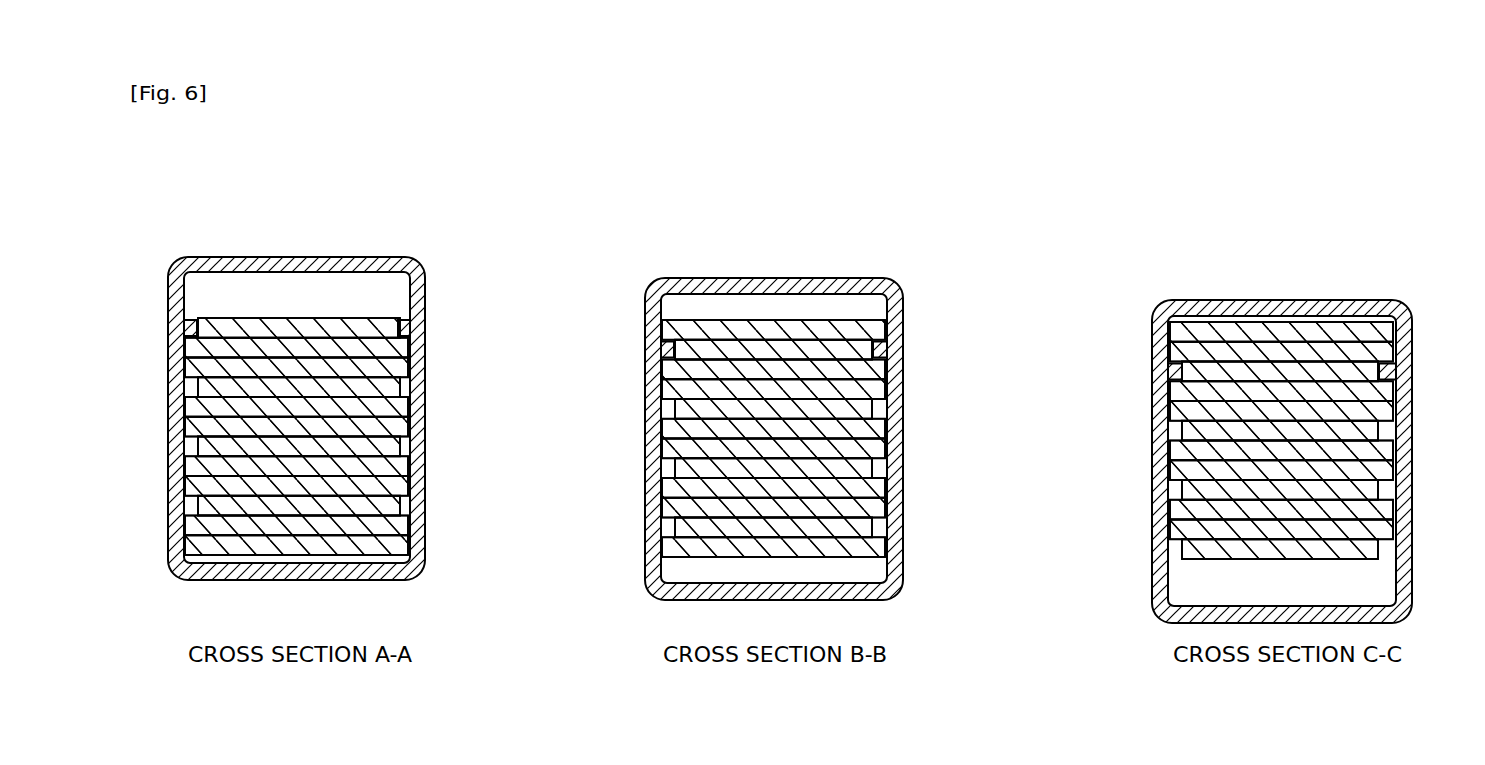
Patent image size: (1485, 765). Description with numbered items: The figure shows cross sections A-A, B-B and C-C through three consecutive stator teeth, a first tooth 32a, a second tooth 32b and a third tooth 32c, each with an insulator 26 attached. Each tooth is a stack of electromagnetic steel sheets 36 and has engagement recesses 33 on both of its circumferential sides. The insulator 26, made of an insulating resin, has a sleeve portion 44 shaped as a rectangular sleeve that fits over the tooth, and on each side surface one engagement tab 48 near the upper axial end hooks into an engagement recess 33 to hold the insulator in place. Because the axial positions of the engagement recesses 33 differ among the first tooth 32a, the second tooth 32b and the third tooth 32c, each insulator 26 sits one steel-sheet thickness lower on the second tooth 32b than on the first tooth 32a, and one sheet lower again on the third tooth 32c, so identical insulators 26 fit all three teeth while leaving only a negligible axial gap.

The insulator 26 is at (283, 257).
The sleeve portion 44 is at (790, 393).
The engagement tab 48 is at (398, 326).
The first tooth 32a is at (247, 320).
The second tooth 32b is at (737, 320).
The third tooth 32c is at (1207, 323).
The engagement recess 33 is at (190, 443).
The electromagnetic steel sheet 36 is at (400, 427).